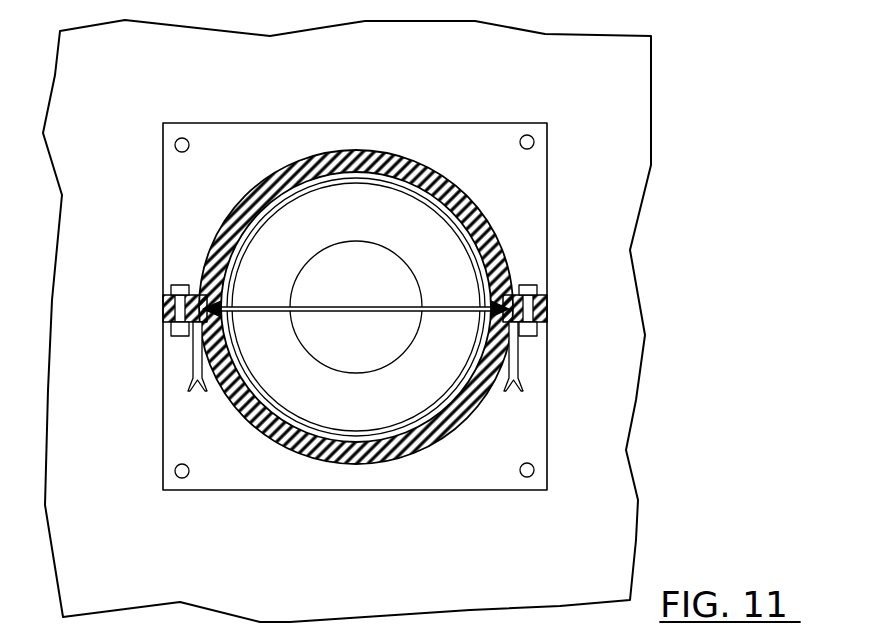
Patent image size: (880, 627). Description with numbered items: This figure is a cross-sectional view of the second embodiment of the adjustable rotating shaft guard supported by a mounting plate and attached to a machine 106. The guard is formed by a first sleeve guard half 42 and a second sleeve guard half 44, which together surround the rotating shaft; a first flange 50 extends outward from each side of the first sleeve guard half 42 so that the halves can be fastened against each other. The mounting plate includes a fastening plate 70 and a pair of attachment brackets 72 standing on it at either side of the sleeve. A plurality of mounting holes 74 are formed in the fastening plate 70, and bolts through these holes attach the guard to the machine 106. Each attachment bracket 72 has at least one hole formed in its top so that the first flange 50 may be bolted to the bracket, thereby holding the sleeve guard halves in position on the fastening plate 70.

The machine 106 is at (652, 60).
The fastening plate 70 is at (548, 165).
The mounting holes 74 is at (175, 146).
The second sleeve guard half 44 is at (396, 153).
The first sleeve guard half 42 is at (415, 452).
The attachment brackets 72 is at (192, 357).
The first flange 50 is at (548, 312).